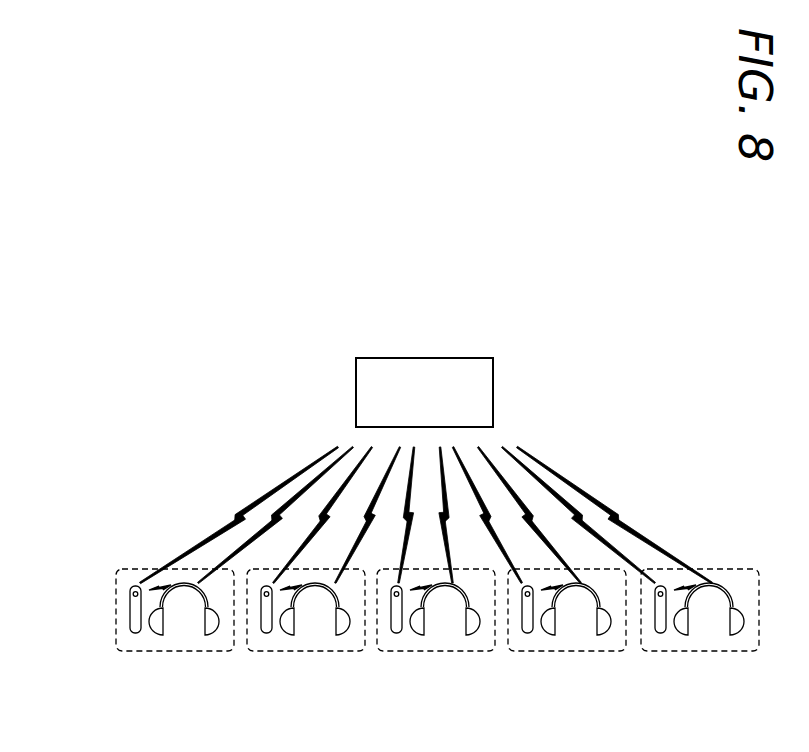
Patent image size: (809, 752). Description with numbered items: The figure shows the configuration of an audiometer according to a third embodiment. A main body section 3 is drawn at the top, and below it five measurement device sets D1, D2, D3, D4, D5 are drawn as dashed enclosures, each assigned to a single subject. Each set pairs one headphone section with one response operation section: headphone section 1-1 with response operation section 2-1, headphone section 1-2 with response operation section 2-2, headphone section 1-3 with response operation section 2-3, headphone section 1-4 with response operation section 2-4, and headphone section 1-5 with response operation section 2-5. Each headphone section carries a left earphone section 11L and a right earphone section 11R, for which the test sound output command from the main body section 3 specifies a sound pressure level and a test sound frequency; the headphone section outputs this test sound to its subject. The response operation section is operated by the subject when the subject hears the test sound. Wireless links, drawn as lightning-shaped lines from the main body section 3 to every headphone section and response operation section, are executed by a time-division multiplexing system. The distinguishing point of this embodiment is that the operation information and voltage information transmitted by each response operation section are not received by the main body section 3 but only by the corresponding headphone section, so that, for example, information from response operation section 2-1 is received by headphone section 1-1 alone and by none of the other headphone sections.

The main body section 3 is at (481, 370).
The headphone section 1-1 is at (149, 644).
The headphone section 1-2 is at (342, 623).
The headphone section 1-3 is at (472, 623).
The headphone section 1-4 is at (603, 623).
The headphone section 1-5 is at (736, 623).
The response operation section 2-1 is at (129, 608).
The response operation section 2-2 is at (269, 629).
The response operation section 2-3 is at (399, 629).
The response operation section 2-4 is at (530, 629).
The response operation section 2-5 is at (663, 629).
The left earphone section 11L is at (152, 632).
The right earphone section 11R is at (207, 623).
The measurement device set D1 is at (221, 651).
The measurement device set D2 is at (352, 651).
The measurement device set D3 is at (482, 651).
The measurement device set D4 is at (613, 651).
The measurement device set D5 is at (746, 651).